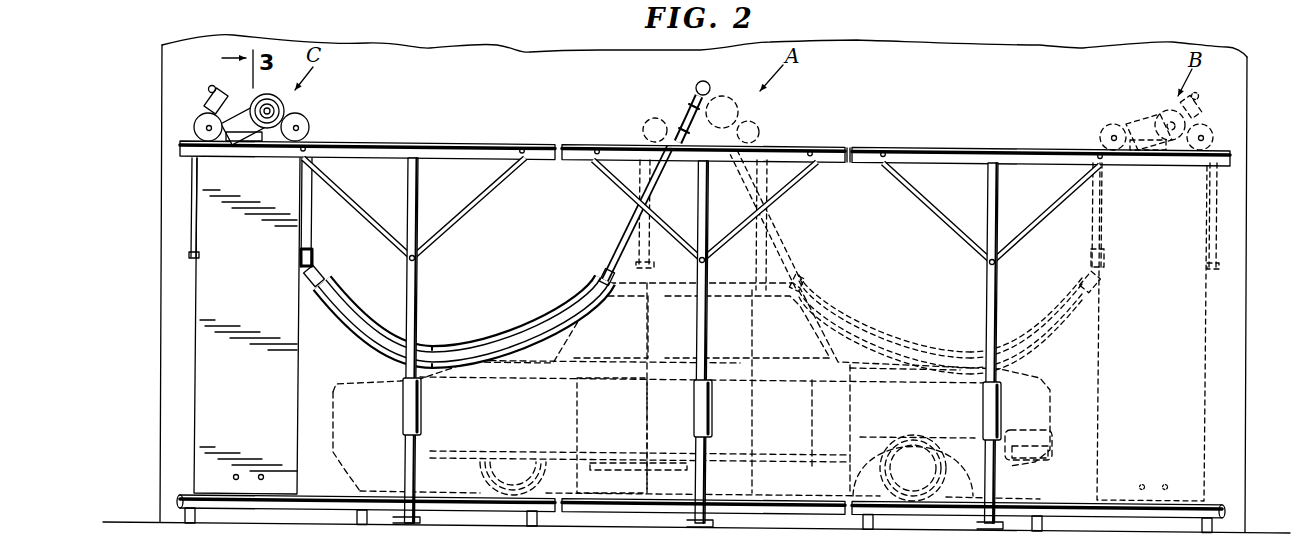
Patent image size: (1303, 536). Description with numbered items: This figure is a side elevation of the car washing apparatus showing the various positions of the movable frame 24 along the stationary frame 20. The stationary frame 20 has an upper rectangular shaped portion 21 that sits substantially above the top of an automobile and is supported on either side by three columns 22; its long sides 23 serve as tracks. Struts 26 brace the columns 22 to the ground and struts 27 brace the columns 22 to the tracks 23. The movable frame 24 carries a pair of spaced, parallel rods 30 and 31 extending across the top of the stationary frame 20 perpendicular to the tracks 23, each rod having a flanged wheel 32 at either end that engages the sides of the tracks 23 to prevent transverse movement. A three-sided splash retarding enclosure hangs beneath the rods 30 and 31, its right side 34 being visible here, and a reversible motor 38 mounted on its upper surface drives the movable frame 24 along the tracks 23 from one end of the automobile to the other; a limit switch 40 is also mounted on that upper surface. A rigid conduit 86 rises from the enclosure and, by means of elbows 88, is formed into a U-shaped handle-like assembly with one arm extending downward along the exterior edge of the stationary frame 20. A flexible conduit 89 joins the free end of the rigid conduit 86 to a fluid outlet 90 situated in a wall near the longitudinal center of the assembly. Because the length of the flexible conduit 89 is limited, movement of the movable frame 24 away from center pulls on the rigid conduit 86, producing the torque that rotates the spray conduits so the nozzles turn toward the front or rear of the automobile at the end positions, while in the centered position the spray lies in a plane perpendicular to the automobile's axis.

The stationary frame 20 is at (505, 140).
The upper rectangular shaped portion 21 is at (565, 142).
The column 22 is at (418, 290).
The long side 23 is at (857, 146).
The movable frame 24 is at (183, 348).
The strut 26 is at (404, 413).
The strut 27 is at (362, 204).
The rod 30 is at (302, 130).
The rod 31 is at (203, 128).
The wheel 32 is at (203, 124).
The right side 34 is at (207, 318).
The reversible motor 38 is at (250, 104).
The limit switch 40 is at (238, 142).
The rigid conduit 86 is at (208, 106).
The 90° elbow 88 is at (210, 87).
The flexible conduit 89 is at (352, 333).
The fluid outlet 90 is at (708, 88).